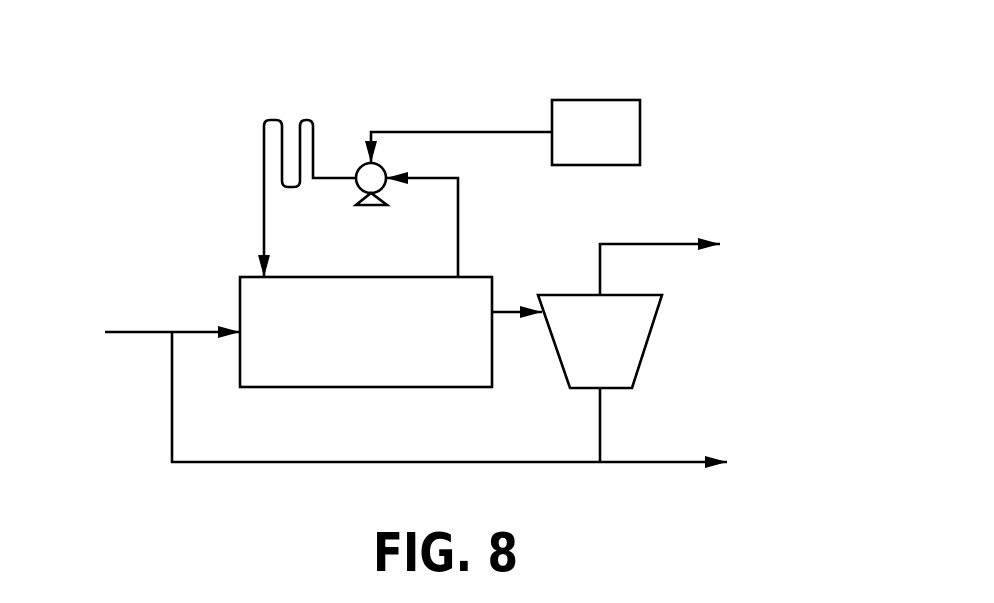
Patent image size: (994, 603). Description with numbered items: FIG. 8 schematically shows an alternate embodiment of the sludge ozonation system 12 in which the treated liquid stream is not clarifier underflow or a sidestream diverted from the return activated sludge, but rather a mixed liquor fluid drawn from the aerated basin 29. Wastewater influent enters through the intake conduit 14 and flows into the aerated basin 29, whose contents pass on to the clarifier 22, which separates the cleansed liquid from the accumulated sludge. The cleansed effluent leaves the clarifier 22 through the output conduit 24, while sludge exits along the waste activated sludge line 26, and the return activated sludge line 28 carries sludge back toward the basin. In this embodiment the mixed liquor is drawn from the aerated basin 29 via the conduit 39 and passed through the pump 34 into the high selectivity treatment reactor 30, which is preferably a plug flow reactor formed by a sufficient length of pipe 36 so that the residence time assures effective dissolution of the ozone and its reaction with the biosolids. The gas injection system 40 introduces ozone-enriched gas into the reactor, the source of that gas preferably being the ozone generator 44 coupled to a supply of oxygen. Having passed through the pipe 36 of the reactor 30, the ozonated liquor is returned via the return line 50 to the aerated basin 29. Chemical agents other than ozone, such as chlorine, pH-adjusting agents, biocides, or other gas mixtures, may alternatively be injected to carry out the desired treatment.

The sludge ozonation system 12 is at (190, 112).
The intake conduit 14 is at (127, 330).
The clarifier 22 is at (637, 340).
The output conduit 24 is at (660, 243).
The waste activated sludge line 26 is at (662, 462).
The return activated sludge line 28 is at (447, 462).
The aerated basin 29 is at (335, 378).
The high selectivity treatment reactor 30 is at (202, 203).
The pump 34 is at (373, 207).
The pipe 36 is at (315, 122).
The conduit 39 is at (459, 222).
The gas injection system 40 is at (467, 70).
The ozone generator 44 is at (633, 132).
The return line 50 is at (263, 238).